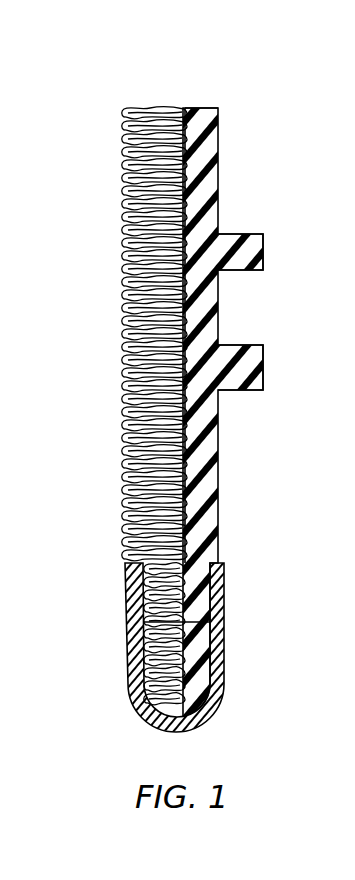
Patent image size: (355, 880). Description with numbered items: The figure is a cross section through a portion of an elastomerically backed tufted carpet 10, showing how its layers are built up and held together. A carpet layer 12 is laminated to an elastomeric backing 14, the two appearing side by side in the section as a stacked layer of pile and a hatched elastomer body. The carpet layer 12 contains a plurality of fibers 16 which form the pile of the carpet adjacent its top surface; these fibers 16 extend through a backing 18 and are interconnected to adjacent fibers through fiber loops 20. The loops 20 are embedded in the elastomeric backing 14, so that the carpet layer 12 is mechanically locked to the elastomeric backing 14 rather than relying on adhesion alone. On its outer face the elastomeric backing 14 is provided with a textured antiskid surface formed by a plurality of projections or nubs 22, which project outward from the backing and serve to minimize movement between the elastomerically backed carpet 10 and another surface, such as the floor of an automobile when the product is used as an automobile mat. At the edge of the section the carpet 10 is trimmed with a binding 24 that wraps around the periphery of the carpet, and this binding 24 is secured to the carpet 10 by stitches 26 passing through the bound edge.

The elastomerically backed tufted carpet 10 is at (196, 98).
The carpet layer 12 is at (125, 96).
The elastomeric backing 14 is at (220, 170).
The fibers 16 is at (123, 194).
The backing 18 is at (183, 106).
The fiber loops 20 is at (218, 110).
The projections or nubs 22 is at (258, 238).
The binding 24 is at (223, 660).
The stitches 26 is at (204, 618).